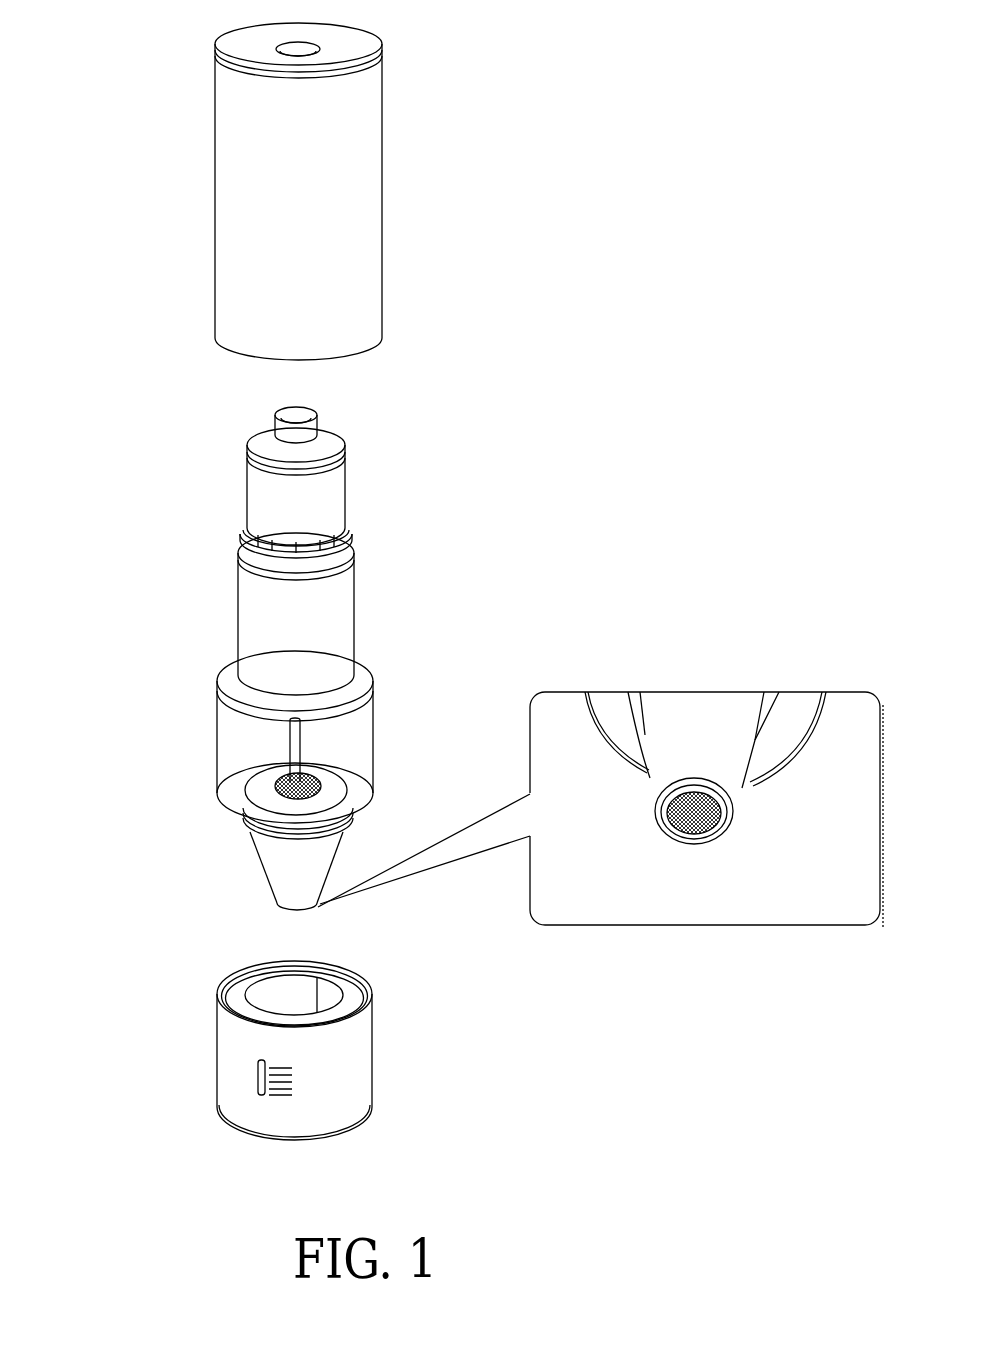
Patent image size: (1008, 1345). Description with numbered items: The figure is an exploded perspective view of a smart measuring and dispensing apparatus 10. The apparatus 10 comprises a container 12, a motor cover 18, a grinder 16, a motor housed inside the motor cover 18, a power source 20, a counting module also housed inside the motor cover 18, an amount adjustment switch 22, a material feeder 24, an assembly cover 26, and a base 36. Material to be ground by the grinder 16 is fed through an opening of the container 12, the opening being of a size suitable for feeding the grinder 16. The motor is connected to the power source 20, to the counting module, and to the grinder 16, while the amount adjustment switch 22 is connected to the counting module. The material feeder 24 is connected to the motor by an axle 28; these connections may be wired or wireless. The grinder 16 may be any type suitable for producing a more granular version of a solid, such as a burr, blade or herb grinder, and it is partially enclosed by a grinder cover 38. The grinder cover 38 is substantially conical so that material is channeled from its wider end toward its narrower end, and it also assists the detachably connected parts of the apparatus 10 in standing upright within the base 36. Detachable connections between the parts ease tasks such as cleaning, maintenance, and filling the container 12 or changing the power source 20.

The apparatus 10 is at (70, 31).
The container 12 is at (217, 770).
The grinder 16 is at (700, 820).
The motor cover 18 is at (323, 625).
The power source 20 is at (270, 537).
The amount adjustment switch 22 is at (260, 1082).
The material feeder 24 is at (275, 787).
The assembly cover 26 is at (248, 202).
The axle 28 is at (296, 757).
The base 36 is at (343, 1070).
The grinder cover 38 is at (283, 872).